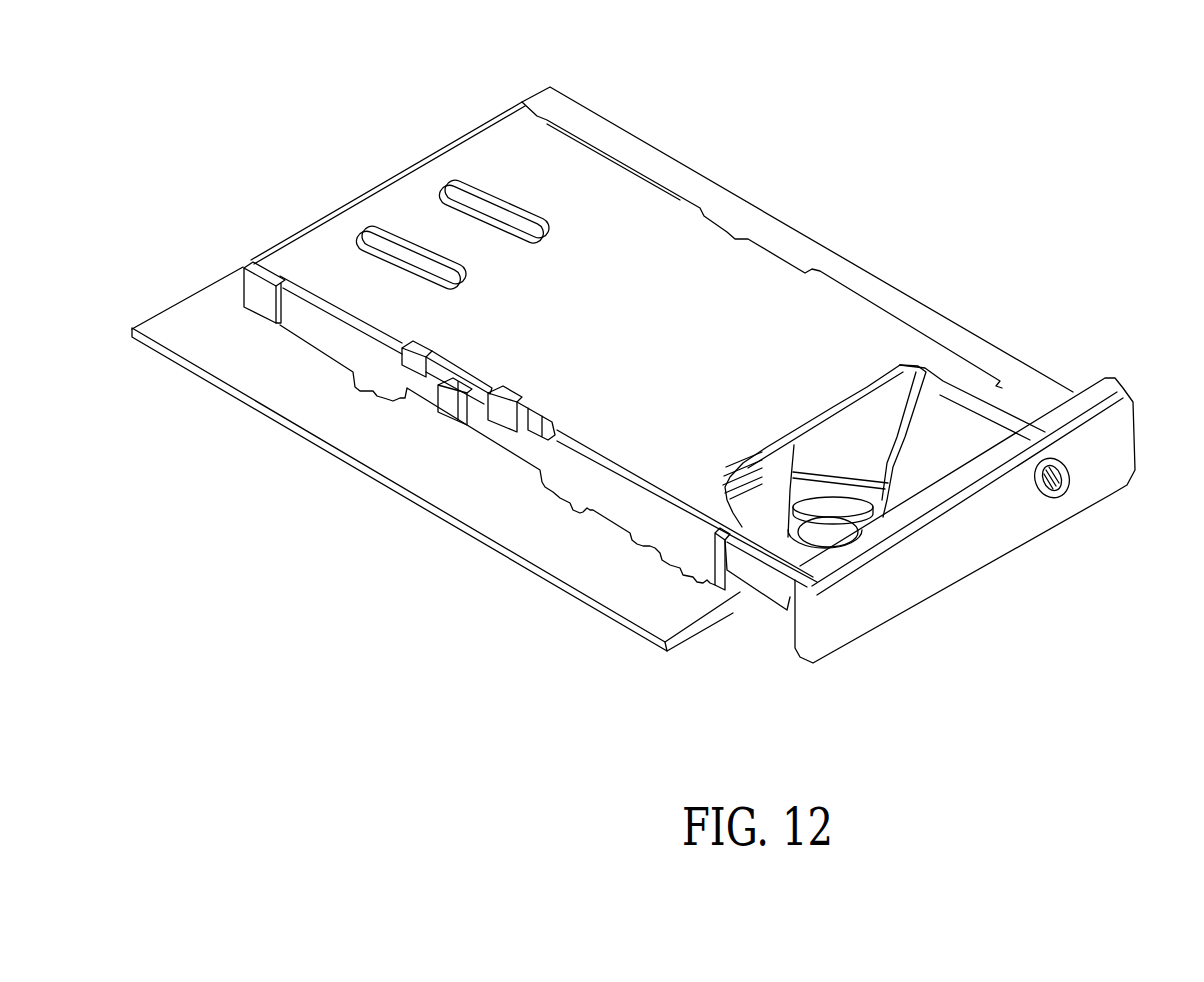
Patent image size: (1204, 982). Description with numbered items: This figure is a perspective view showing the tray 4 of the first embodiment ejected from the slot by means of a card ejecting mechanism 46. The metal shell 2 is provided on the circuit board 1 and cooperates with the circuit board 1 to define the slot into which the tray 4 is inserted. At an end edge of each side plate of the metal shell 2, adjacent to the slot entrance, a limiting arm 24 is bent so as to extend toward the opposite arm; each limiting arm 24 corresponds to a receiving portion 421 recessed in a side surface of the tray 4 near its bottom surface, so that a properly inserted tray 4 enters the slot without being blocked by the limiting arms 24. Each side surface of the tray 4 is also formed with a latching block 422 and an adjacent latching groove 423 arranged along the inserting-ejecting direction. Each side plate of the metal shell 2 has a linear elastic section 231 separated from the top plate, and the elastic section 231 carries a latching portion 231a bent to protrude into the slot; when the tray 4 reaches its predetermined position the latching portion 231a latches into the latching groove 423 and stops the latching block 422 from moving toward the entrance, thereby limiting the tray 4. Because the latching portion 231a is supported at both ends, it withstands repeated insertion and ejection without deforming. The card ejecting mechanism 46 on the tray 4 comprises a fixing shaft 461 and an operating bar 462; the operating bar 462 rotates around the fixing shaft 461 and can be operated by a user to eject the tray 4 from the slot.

The circuit board 1 is at (575, 562).
The metal shell 2 is at (423, 124).
The limiting arm 24 is at (733, 594).
The elastic section 231 is at (513, 440).
The latching portion 231a is at (448, 386).
The tray 4 is at (960, 487).
The receiving portion 421 is at (779, 597).
The latching block 422 is at (493, 397).
The latching groove 423 is at (512, 420).
The card ejecting mechanism 46 is at (890, 525).
The fixing shaft 461 is at (828, 531).
The operating bar 462 is at (867, 443).